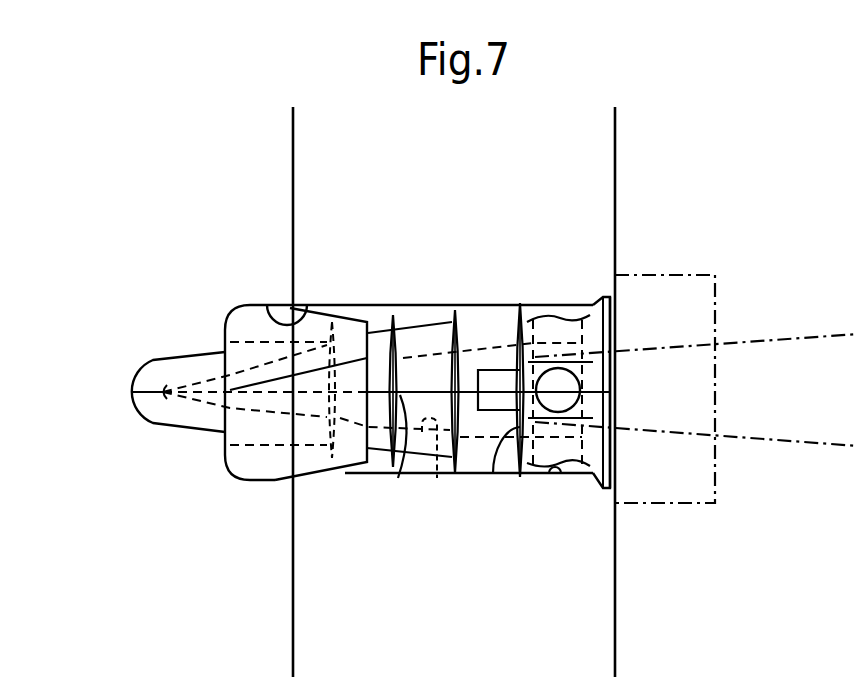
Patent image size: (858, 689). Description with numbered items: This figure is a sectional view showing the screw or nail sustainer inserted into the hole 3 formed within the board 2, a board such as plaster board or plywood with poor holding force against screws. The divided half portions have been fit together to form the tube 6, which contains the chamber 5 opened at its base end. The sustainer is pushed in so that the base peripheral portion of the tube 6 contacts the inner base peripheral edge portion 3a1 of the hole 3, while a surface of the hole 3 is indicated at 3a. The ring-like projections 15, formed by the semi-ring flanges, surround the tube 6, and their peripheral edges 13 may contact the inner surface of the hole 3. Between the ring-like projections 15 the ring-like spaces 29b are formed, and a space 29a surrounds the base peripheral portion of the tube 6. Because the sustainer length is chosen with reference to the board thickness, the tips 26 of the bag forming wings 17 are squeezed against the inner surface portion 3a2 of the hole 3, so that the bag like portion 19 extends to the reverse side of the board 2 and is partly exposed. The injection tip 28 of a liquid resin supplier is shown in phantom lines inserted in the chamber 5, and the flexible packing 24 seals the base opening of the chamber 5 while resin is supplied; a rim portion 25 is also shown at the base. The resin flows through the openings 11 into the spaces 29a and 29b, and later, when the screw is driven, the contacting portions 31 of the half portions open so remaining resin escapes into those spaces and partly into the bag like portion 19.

The board 2 is at (567, 638).
The hole 3 is at (378, 328).
The sleeve body 3a is at (573, 477).
The inner base peripheral edge portion 3a1 is at (617, 312).
The inner surface portion 3a2 is at (267, 306).
The chamber 5 is at (437, 478).
The tube 6 is at (432, 342).
The openings 11 is at (565, 400).
The peripheral edges 13 is at (530, 473).
The ring-like projections 15 is at (492, 403).
The bag forming wings 17 is at (283, 460).
The bag like portion 19 is at (258, 460).
The packing 24 is at (688, 482).
The flange rim 25 is at (603, 300).
The tips 26 is at (318, 455).
The injection tip 28 is at (480, 437).
The space 29a is at (563, 303).
The ring-like spaces 29b is at (427, 317).
The contacting portions 31 is at (404, 450).